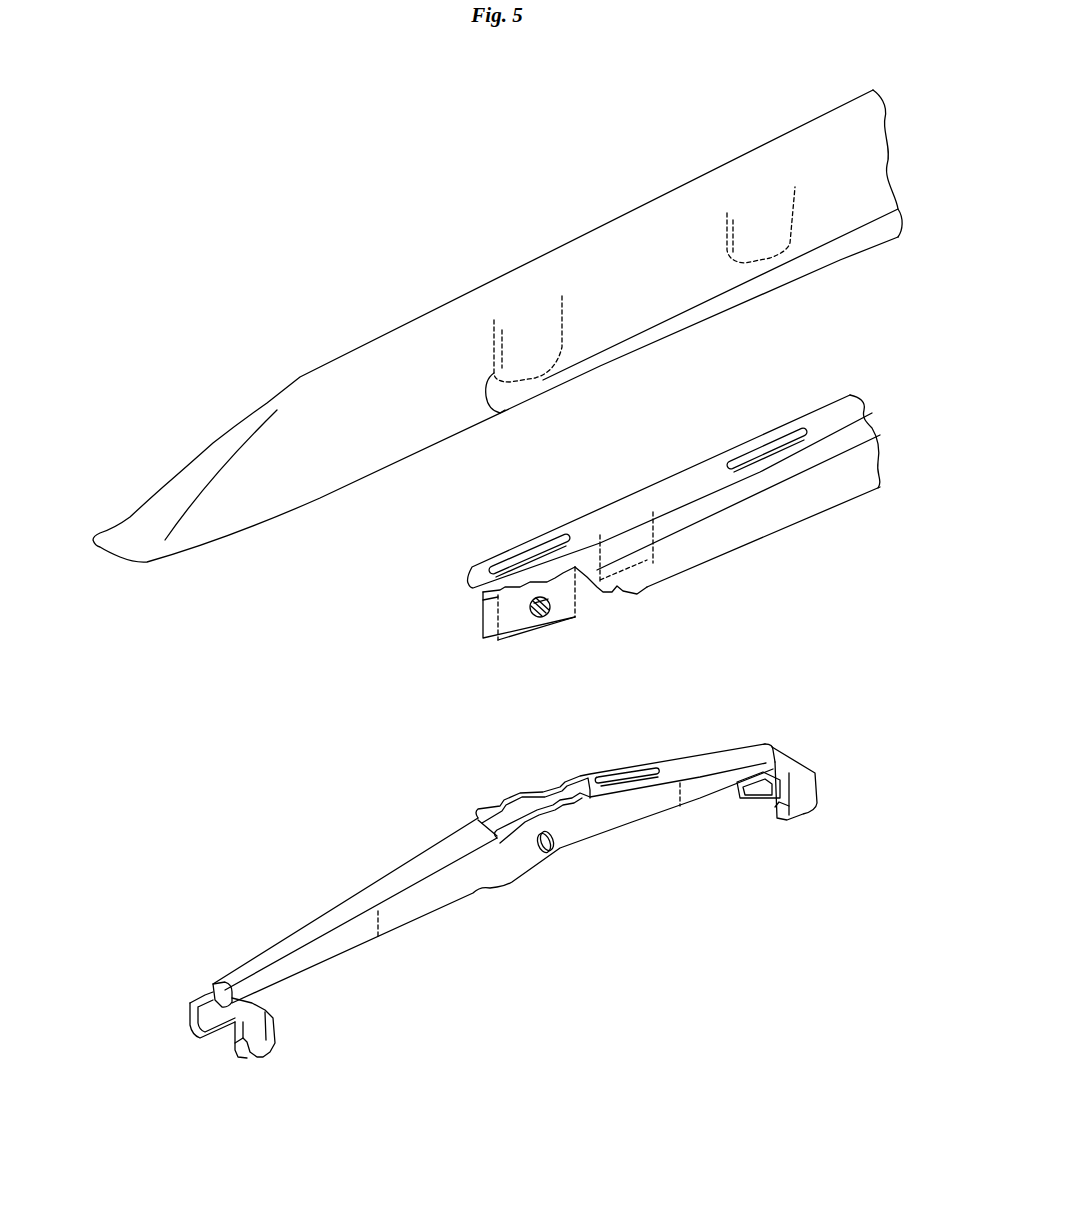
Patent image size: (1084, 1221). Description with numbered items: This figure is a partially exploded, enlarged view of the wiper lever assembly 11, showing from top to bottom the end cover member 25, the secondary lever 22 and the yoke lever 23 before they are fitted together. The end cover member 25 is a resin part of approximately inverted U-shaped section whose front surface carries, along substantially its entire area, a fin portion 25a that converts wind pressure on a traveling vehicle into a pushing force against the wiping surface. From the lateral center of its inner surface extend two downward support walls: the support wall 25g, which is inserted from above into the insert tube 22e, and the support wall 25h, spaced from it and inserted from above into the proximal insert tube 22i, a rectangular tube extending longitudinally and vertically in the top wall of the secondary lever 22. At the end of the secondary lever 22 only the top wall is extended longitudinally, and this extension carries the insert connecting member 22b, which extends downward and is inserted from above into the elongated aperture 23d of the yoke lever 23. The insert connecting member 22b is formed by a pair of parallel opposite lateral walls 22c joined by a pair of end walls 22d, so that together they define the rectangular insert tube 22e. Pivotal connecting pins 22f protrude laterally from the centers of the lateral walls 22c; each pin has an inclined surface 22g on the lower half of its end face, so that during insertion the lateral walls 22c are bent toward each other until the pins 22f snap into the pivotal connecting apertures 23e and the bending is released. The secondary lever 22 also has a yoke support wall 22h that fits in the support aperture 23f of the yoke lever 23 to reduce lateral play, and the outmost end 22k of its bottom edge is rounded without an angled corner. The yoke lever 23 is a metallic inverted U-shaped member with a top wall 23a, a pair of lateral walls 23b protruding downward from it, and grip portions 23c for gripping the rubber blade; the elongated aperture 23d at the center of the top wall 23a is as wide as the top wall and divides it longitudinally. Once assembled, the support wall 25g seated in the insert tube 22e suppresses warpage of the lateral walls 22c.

The wiper lever assembly 11 is at (341, 258).
The end cover member 25 is at (698, 178).
The fin portion 25a is at (598, 242).
The support wall 25g is at (498, 413).
The support wall 25h is at (808, 200).
The secondary lever 22 is at (820, 407).
The proximal insert tube 22i is at (752, 448).
The yoke support wall 22h is at (658, 585).
The outmost end of bottom edge 22k is at (600, 596).
The insert connecting member 22b is at (482, 652).
The opposite lateral walls 22c is at (517, 648).
The end walls 22d is at (470, 628).
The insert tube 22e is at (576, 615).
The pivotal connecting pin 22f is at (552, 604).
The inclined surface 22g is at (541, 620).
The yoke lever 23 is at (387, 875).
The top wall 23a is at (353, 903).
The lateral walls 23b is at (413, 922).
The grip portions 23c is at (805, 812).
The elongated aperture 23d is at (578, 798).
The pivotal connecting aperture 23e is at (550, 857).
The support aperture 23f is at (627, 775).